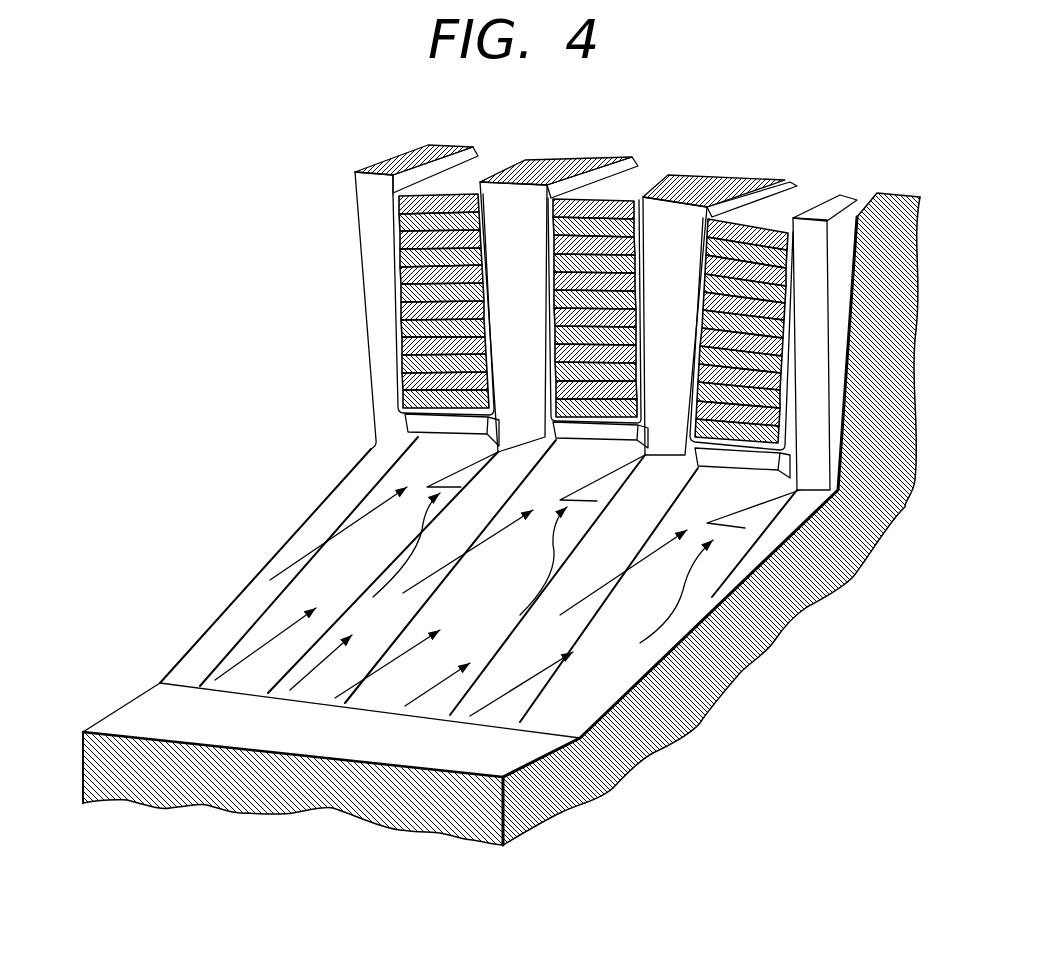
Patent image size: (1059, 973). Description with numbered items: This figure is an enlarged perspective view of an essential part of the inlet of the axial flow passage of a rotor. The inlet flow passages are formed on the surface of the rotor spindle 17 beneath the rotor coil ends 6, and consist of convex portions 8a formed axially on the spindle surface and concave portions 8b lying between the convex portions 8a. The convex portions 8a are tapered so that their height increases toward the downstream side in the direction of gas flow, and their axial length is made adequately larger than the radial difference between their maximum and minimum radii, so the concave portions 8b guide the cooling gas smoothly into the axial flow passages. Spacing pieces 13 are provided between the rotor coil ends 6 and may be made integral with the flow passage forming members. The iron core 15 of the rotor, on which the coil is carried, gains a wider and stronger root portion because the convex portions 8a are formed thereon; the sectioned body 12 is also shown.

The rotor coil ends 6 is at (388, 217).
The convex portions 8a is at (480, 488).
The concave portions 8b is at (332, 595).
The yoke 12 is at (745, 624).
The spacing pieces 13 is at (513, 200).
The iron core 15 is at (730, 173).
The rotor spindle 17 is at (142, 706).